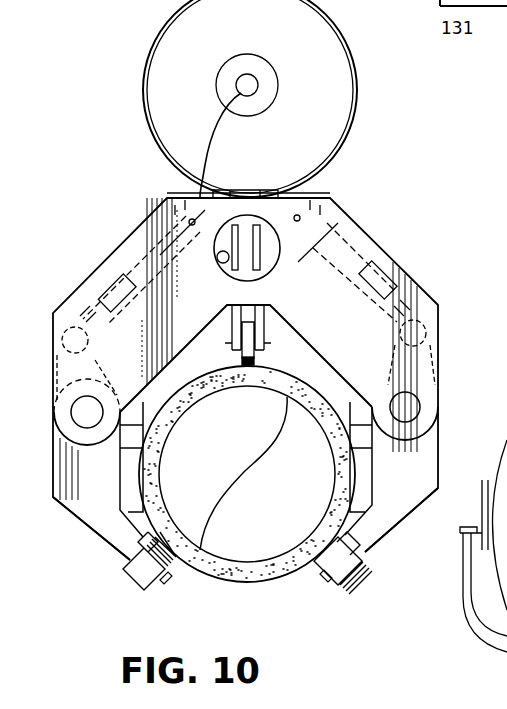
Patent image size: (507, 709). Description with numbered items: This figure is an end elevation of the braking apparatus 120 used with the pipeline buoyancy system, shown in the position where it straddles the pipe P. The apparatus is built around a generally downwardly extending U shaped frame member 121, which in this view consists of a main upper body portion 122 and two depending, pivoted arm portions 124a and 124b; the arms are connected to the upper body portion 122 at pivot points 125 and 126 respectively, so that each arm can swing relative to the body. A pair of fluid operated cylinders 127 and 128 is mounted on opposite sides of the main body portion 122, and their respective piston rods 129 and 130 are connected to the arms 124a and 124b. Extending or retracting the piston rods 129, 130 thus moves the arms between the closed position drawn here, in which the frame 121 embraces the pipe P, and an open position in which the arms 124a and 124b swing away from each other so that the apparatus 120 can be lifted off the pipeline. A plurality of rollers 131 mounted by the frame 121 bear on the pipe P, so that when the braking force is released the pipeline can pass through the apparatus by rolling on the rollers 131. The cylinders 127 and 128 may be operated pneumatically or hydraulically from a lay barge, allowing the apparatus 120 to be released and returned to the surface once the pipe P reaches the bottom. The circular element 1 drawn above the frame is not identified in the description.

The reel 1 is at (315, 126).
The braking apparatus 120 is at (402, 220).
The U shaped frame member 121 is at (390, 296).
The main upper body portion 122 is at (335, 222).
The pivoted arm portion 124a is at (110, 527).
The pivoted arm portion 124b is at (420, 468).
The pivot point 125 is at (92, 417).
The pivot point 126 is at (413, 407).
The fluid operated cylinder 127 is at (137, 247).
The fluid operated cylinder 128 is at (373, 262).
The piston rod 129 is at (98, 306).
The piston rod 130 is at (393, 298).
The roller 131 is at (253, 352).
The pipe P is at (247, 573).